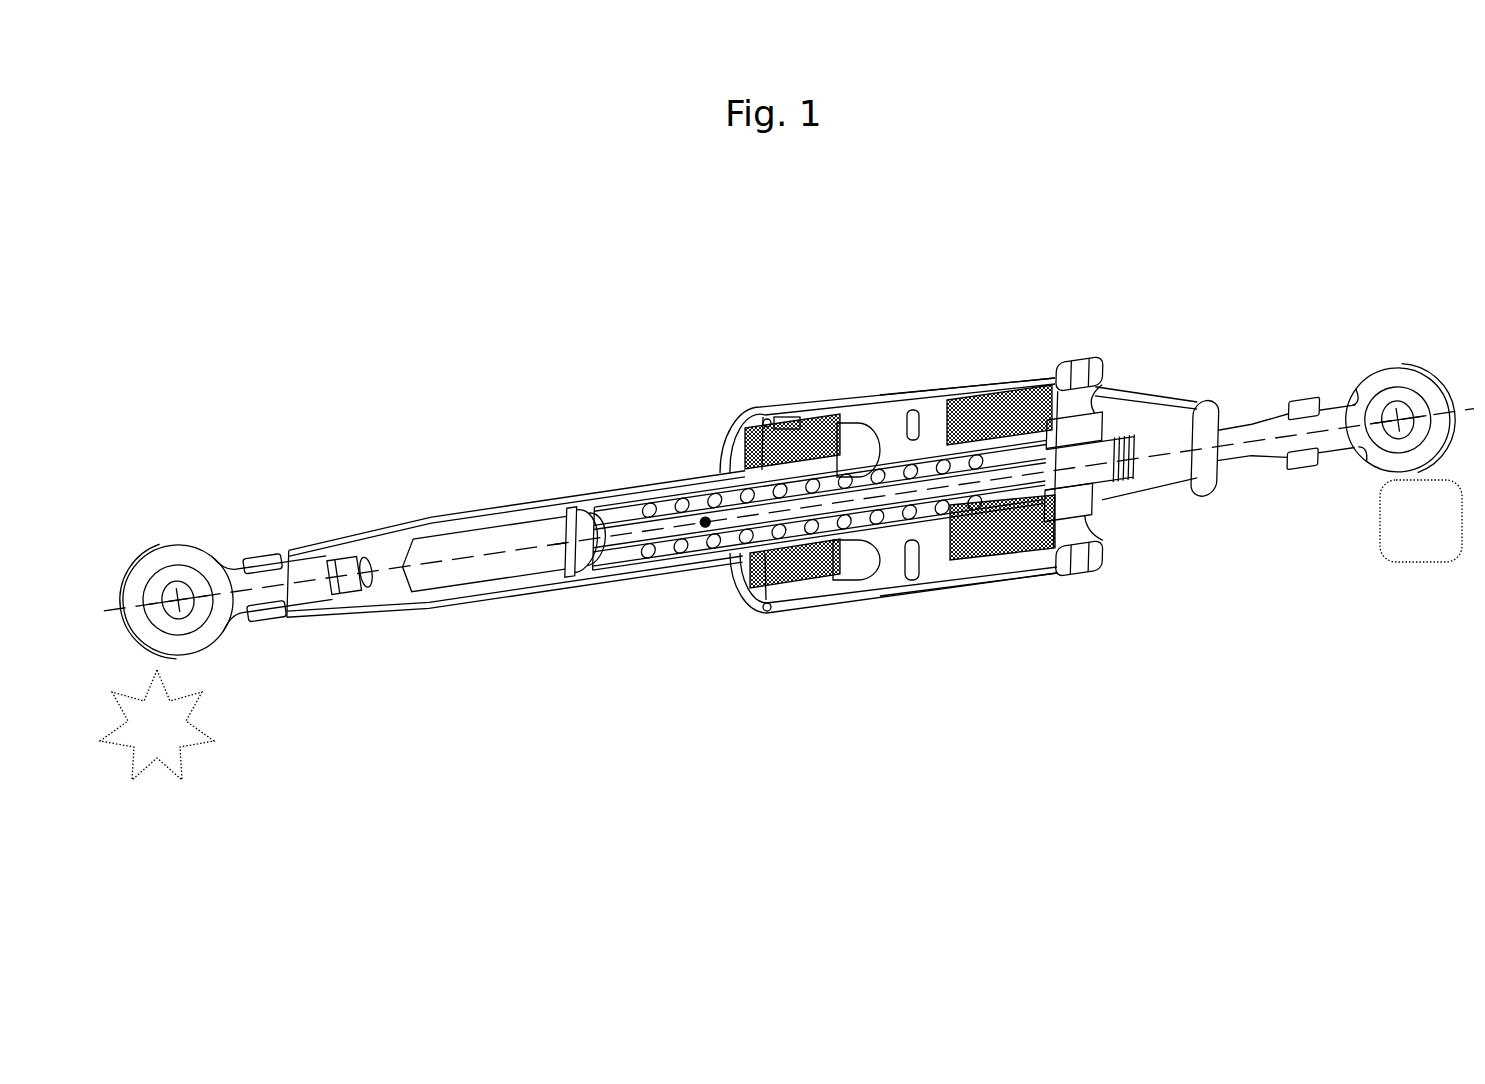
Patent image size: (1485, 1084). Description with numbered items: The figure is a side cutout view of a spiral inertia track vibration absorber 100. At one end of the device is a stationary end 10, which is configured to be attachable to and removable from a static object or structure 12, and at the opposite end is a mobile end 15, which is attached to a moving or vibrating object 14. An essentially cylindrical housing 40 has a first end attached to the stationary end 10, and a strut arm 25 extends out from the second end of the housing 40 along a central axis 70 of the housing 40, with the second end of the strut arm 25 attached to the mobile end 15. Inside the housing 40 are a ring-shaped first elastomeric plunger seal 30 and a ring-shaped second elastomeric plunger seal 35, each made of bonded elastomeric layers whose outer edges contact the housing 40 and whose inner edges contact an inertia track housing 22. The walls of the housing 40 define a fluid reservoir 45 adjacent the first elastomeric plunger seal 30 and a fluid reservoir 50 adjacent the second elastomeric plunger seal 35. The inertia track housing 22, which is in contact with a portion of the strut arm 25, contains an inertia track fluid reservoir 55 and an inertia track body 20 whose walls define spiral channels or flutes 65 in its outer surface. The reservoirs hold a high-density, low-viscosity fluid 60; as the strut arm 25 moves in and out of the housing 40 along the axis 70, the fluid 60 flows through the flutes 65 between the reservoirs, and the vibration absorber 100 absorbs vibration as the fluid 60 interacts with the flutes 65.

The spiral inertia track vibration absorber 100 is at (1442, 348).
The stationary end 10 is at (1383, 383).
The static object or structure 12 is at (1421, 521).
The moving or vibrating object 14 is at (157, 725).
The mobile end 15 is at (171, 549).
The inertia track body 20 is at (688, 506).
The inertia track housing 22 is at (742, 483).
The strut arm 25 is at (470, 521).
The first elastomeric plunger seal 30 is at (810, 587).
The second elastomeric plunger seal 35 is at (1012, 573).
The housing 40 is at (892, 413).
The fluid reservoir 45 is at (853, 424).
The fluid reservoir 50 is at (965, 437).
The inertia track fluid reservoir 55 is at (603, 550).
The fluid 60 is at (851, 439).
The flutes 65 is at (704, 518).
The central axis 70 is at (1164, 456).